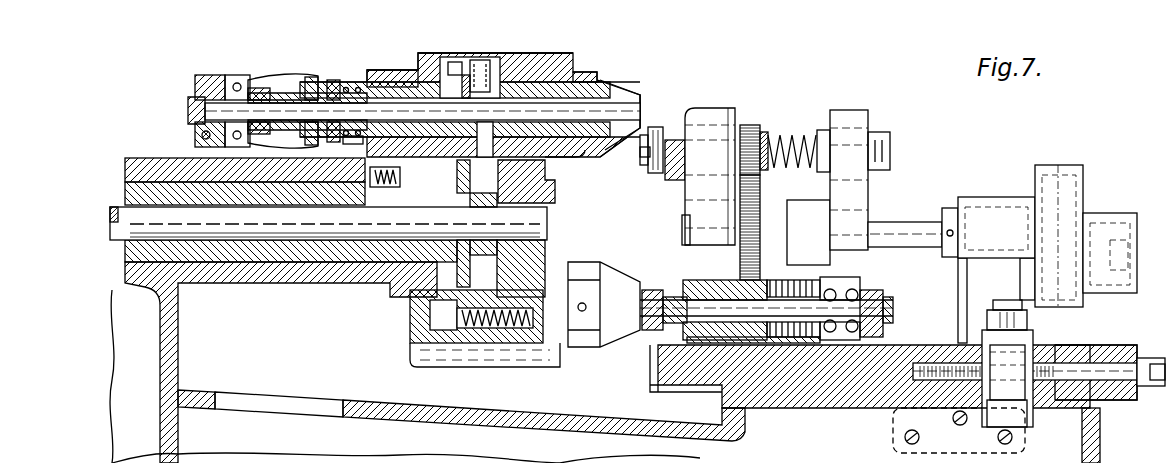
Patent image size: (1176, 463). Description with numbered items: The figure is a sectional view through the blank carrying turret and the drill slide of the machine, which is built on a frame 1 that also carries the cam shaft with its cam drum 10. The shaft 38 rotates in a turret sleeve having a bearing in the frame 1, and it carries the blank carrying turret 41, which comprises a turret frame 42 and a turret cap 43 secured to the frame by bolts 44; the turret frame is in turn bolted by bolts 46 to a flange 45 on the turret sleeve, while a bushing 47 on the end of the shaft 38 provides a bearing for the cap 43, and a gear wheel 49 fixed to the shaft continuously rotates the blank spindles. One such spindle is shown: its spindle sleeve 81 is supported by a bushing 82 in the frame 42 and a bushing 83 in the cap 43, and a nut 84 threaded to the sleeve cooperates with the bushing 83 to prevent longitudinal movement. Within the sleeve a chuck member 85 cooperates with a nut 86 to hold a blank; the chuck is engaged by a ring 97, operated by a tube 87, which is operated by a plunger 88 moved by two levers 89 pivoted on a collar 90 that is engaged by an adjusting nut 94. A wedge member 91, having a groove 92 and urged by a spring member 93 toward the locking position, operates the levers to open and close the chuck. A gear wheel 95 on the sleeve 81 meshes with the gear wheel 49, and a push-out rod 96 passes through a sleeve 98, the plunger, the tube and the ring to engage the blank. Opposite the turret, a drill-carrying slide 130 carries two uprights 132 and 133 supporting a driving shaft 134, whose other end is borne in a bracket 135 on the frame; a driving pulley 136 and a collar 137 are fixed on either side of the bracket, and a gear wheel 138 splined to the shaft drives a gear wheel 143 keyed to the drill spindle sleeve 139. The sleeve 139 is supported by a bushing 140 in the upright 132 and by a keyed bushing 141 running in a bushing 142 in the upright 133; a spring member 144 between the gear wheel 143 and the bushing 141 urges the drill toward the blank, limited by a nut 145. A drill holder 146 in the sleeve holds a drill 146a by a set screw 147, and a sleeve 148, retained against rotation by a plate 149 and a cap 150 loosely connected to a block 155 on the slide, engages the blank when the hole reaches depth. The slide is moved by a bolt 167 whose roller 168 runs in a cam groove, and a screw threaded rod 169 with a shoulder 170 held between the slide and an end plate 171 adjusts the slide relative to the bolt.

The frame 1 is at (1100, 442).
The cam drum 10 is at (125, 192).
The shaft 38 is at (112, 232).
The blank carrying turret 41 is at (540, 35).
The turret frame 42 is at (433, 55).
The turret cap 43 is at (540, 54).
The bolts 44 is at (505, 330).
The flange 45 is at (410, 302).
The bolts 46 is at (400, 180).
The bushing 47 is at (545, 202).
The gear wheel 49 is at (462, 176).
The spindle sleeve 81 is at (576, 78).
The bushing 82 is at (365, 75).
The bushing 83 is at (570, 64).
The nut 84 is at (470, 64).
The chuck member 85 is at (566, 160).
The nut 86 is at (615, 84).
The tube 87 is at (348, 88).
The plunger 88 is at (250, 82).
The levers 89 is at (281, 77).
The collar 90 is at (226, 75).
The wedge member 91 is at (309, 77).
The groove 92 is at (333, 80).
The spring member 93 is at (350, 140).
The adjusting nut 94 is at (202, 74).
The gear wheel 95 is at (450, 57).
The push-out rod 96 is at (192, 100).
The ring 97 is at (478, 60).
The sleeve 98 is at (200, 130).
The drill-carrying slide 130 is at (890, 346).
The upright 132 is at (718, 108).
The upright 133 is at (850, 110).
The driving shaft 134 is at (682, 229).
The bracket 135 is at (982, 197).
The driving pulley 136 is at (1066, 165).
The collar 137 is at (948, 210).
The gear wheel 138 is at (762, 194).
The sleeve 139 is at (675, 297).
The bushing 140 is at (705, 282).
The bushing 141 is at (838, 280).
The bushing 142 is at (880, 291).
The gear wheel 143 is at (762, 133).
The spring member 144 is at (772, 336).
The nut 145 is at (893, 302).
The drill holder 146 is at (640, 330).
The drill 146a is at (590, 312).
The set screw 147 is at (660, 300).
The sleeve 148 is at (642, 292).
The plate 149 is at (652, 127).
The cap 150 is at (660, 132).
The block 155 is at (668, 182).
The bolt 167 is at (1005, 311).
The roller 168 is at (1033, 426).
The screw threaded rod 169 is at (1080, 364).
The shoulder 170 is at (1112, 348).
The end plate 171 is at (1142, 360).